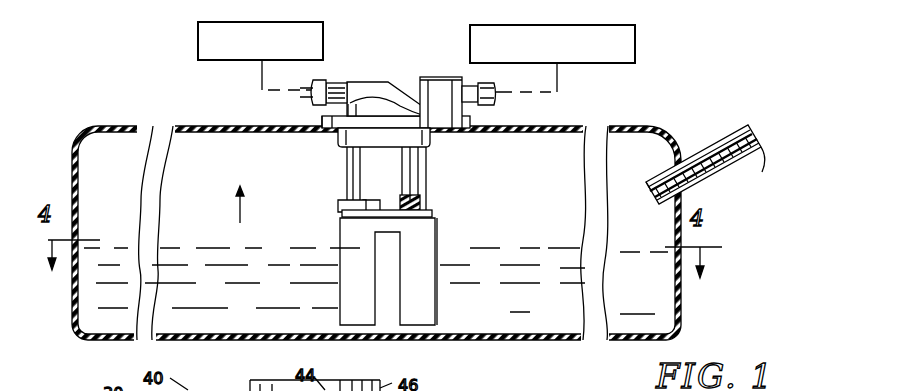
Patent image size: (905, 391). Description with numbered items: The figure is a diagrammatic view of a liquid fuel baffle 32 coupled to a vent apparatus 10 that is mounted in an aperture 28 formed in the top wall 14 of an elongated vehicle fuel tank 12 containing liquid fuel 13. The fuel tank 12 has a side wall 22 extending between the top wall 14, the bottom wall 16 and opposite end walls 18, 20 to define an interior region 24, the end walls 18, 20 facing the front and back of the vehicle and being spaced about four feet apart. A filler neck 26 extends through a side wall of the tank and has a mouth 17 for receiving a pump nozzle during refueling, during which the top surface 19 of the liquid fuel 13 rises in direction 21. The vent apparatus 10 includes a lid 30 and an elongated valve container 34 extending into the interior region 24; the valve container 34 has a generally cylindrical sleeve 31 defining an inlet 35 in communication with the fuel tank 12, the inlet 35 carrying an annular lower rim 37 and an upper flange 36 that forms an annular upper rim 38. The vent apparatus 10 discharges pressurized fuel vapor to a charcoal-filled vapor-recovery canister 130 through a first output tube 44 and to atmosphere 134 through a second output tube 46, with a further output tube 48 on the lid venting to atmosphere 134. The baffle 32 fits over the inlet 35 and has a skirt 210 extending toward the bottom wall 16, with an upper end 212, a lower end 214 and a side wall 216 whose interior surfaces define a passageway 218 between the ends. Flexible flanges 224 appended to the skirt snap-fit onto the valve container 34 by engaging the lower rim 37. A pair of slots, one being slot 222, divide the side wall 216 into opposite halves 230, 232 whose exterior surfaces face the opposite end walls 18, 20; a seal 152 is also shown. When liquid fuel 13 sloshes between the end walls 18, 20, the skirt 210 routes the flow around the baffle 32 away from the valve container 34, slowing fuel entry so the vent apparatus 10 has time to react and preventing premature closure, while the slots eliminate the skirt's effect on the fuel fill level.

The vent apparatus 10 is at (397, 127).
The fuel tank 12 is at (611, 130).
The liquid fuel 13 is at (167, 258).
The top wall 14 is at (220, 125).
The bottom wall 16 is at (130, 340).
The mouth 17 is at (758, 170).
The end wall 18 is at (80, 274).
The top surface 19 is at (555, 253).
The end wall 20 is at (682, 308).
The direction 21 is at (240, 223).
The side wall 22 is at (190, 152).
The interior region 24 is at (126, 152).
The filler neck 26 is at (707, 137).
The aperture 28 is at (470, 130).
The lid 30 is at (419, 64).
The cylindrical sleeve 31 is at (345, 172).
The liquid fuel baffle 32 is at (340, 301).
The valve container 34 is at (364, 186).
The inlet 35 is at (400, 220).
The upper flange 36 is at (338, 140).
The annular lower rim 37 is at (374, 205).
The annular upper rim 38 is at (410, 152).
The first output tube 44 is at (335, 78).
The second output tube 46 is at (479, 64).
The second output tube 48 is at (495, 100).
The vapor-recovery canister 130 is at (197, 47).
The atmosphere 134 is at (638, 52).
The seal 152 is at (426, 205).
The skirt 210 is at (425, 310).
The upper end 212 is at (302, 196).
The lower end 214 is at (433, 322).
The side wall 216 is at (438, 296).
The passageway 218 is at (385, 302).
The slot 222 is at (397, 305).
The flange 224 is at (372, 205).
The half 230 is at (340, 245).
The half 232 is at (385, 290).